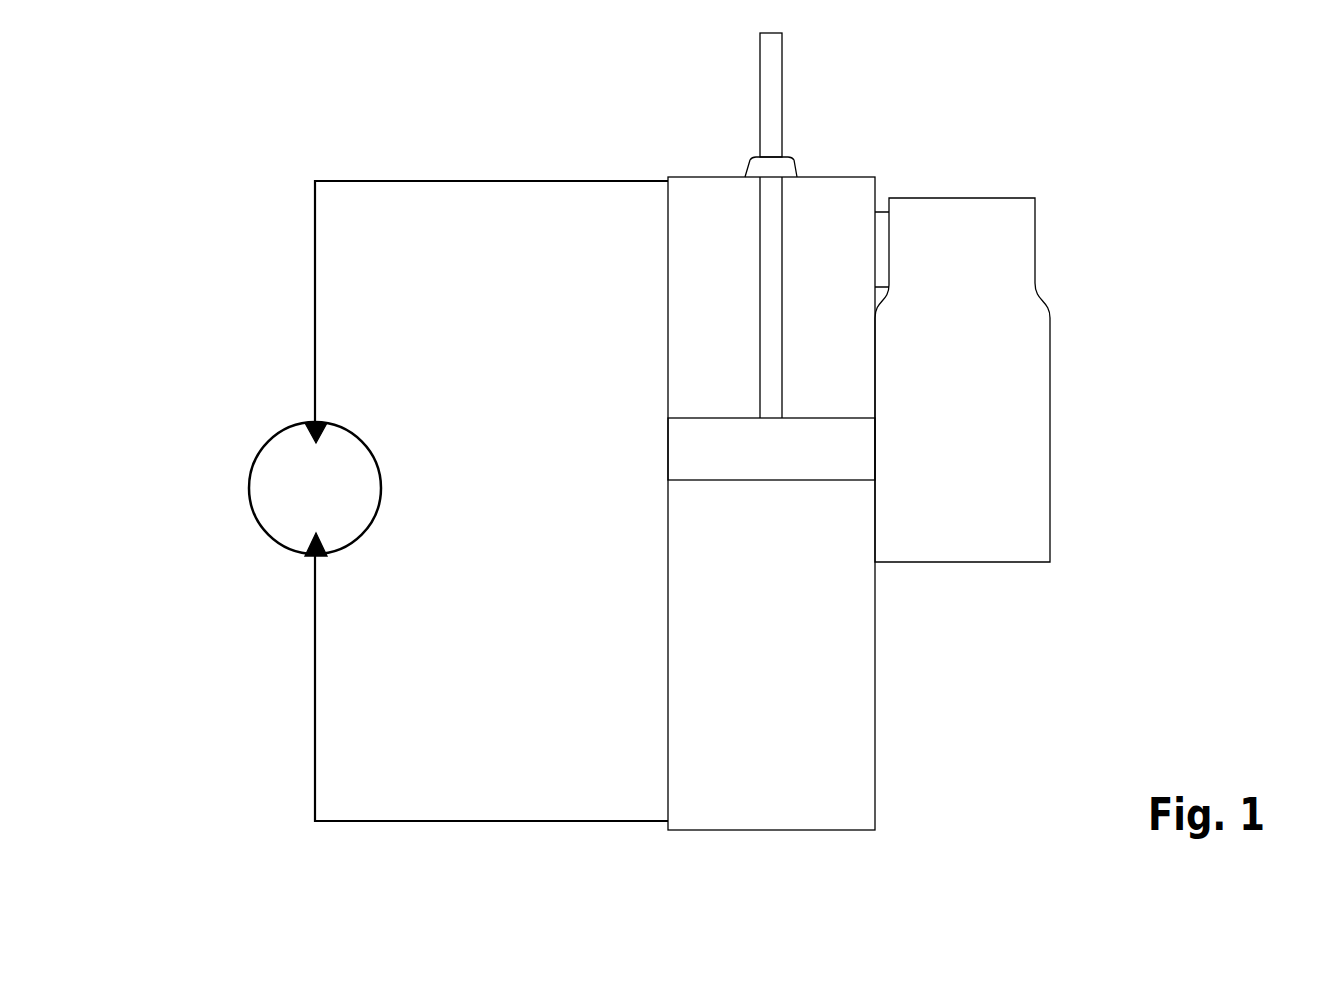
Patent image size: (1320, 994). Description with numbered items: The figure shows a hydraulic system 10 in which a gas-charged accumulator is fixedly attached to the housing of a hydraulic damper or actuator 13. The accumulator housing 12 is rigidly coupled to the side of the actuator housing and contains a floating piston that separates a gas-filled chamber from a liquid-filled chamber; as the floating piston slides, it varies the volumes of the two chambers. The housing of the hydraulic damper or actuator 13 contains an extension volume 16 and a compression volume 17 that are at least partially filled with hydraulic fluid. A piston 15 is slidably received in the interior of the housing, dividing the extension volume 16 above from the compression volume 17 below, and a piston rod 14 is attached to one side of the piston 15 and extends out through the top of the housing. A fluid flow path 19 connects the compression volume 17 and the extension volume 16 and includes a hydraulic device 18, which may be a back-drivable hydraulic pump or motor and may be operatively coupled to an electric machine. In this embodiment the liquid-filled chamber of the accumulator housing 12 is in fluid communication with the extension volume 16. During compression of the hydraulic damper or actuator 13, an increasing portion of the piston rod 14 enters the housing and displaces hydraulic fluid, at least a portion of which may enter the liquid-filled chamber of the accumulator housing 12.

The hydraulic system 10 is at (1168, 208).
The accumulator housing 12 is at (962, 380).
The hydraulic damper or actuator 13 is at (625, 352).
The piston rod 14 is at (772, 114).
The piston 15 is at (771, 449).
The extension volume 16 is at (771, 297).
The compression volume 17 is at (771, 655).
The hydraulic device 18 is at (283, 502).
The fluid flow path 19 is at (315, 233).